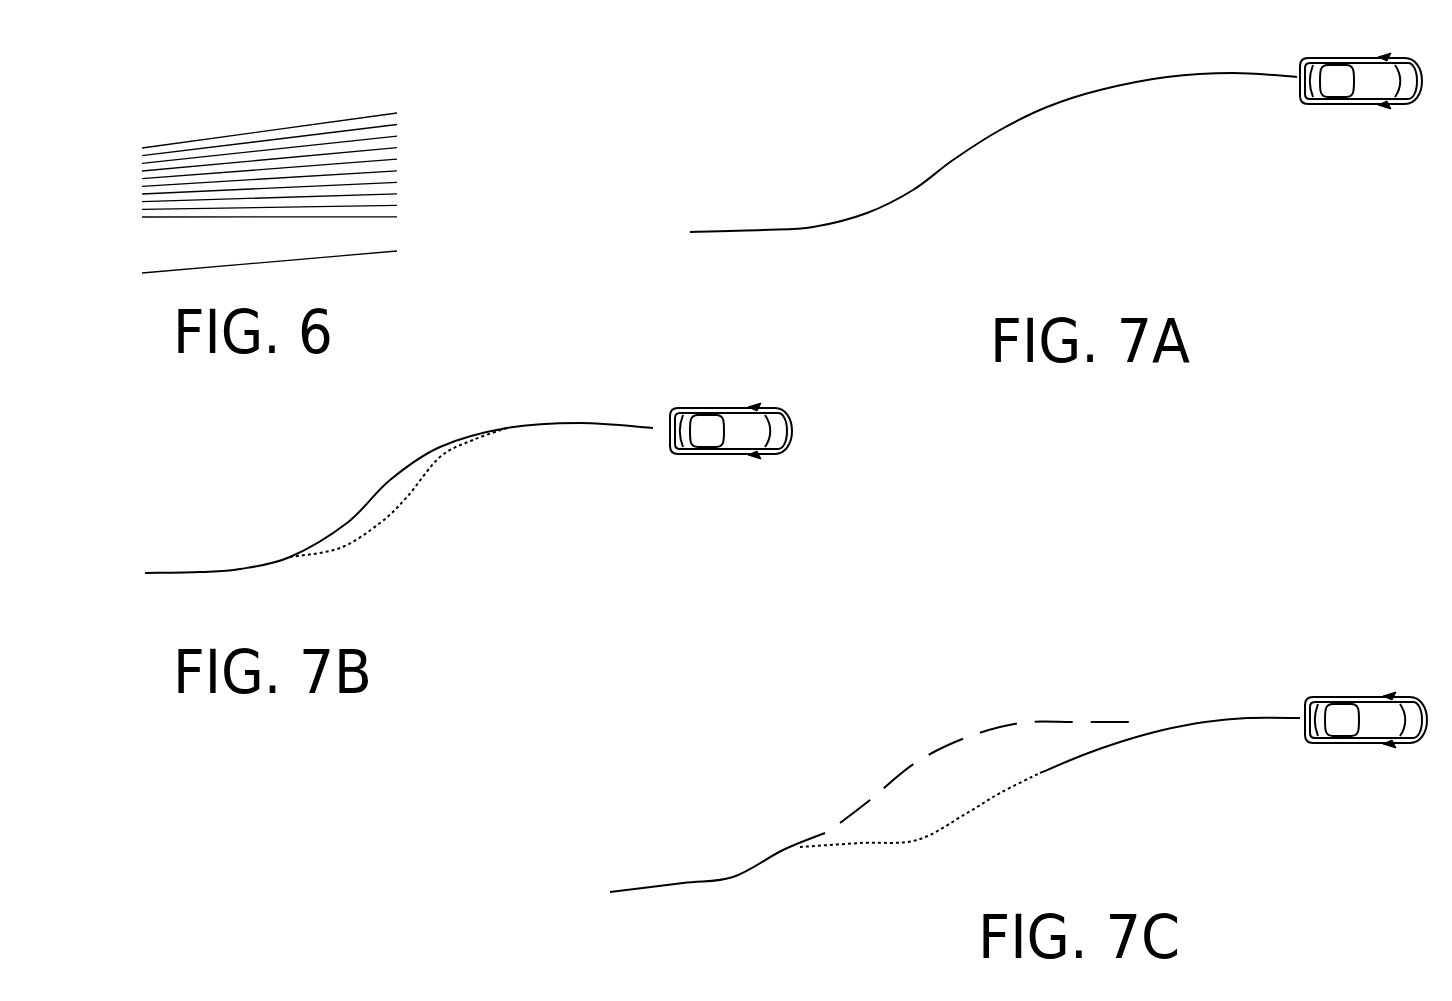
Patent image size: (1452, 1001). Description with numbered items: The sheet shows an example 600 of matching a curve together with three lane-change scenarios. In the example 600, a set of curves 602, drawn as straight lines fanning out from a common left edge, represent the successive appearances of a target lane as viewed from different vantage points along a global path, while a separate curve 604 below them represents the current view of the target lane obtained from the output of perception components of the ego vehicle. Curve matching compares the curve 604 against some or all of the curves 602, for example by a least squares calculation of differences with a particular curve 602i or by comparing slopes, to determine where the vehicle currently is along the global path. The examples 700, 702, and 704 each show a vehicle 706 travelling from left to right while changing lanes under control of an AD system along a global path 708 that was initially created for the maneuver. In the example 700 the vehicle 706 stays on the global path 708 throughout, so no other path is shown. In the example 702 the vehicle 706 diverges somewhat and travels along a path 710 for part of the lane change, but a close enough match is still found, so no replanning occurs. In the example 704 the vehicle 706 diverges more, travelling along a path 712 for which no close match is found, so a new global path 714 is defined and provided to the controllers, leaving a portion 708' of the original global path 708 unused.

In FIG. 6, the example of matching a curve 600 is at (540, 90).
In FIG. 6, the curves 602 is at (343, 169).
In FIG. 6, the curve of index i 602i is at (388, 183).
In FIG. 6, the curve 604 is at (388, 252).
In FIG. 7A, the example 700 is at (890, 101).
In FIG. 7B, the example 702 is at (228, 465).
In FIG. 7C, the example 704 is at (793, 720).
In FIG. 7A, the vehicle 706 is at (1312, 105).
In FIG. 7B, the vehicle 706 is at (682, 455).
In FIG. 7C, the vehicle 706 is at (1318, 745).
In FIG. 7A, the global path 708 is at (993, 152).
In FIG. 7B, the global path 708 is at (399, 498).
In FIG. 7C, the global path 708 is at (717, 862).
In FIG. 7C, the portion of the global path 708' is at (973, 772).
In FIG. 7B, the path 710 is at (417, 487).
In FIG. 7C, the path 712 is at (857, 843).
In FIG. 7C, the new global path 714 is at (1083, 755).